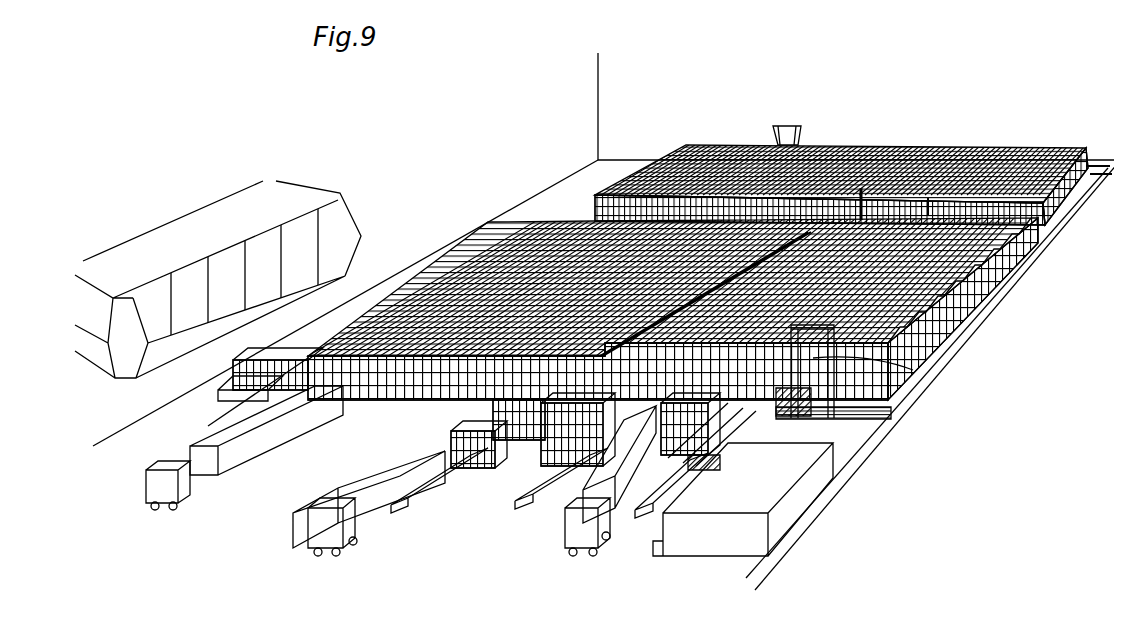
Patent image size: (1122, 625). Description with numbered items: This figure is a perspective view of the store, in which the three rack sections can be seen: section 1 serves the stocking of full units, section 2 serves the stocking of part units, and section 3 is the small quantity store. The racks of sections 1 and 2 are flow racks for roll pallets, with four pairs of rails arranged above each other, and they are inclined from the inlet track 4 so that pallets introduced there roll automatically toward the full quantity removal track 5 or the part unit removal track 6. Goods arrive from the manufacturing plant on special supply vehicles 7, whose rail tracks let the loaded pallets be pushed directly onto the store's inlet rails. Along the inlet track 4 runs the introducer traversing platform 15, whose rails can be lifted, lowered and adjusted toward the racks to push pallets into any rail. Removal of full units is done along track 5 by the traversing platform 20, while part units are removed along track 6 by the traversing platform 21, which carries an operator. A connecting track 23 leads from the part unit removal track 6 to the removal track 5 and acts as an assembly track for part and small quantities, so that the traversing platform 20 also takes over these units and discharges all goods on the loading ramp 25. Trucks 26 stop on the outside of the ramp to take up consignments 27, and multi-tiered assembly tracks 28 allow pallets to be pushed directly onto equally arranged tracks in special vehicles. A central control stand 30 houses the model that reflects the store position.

The rack section for full units 1 is at (673, 299).
The rack section for part units 2 is at (841, 185).
The small quantity store 3 is at (270, 374).
The inlet track 4 is at (920, 190).
The full quantity removal track 5 is at (882, 410).
The part unit removal track 6 is at (1090, 158).
The supply vehicle 7 is at (212, 427).
The introducer traversing platform 15 is at (872, 180).
The full unit removal traversing platform 20 is at (895, 358).
The part unit removal traversing platform 21 is at (781, 118).
The connecting track 23 is at (1057, 207).
The loading ramp 25 is at (838, 425).
The truck 26 is at (622, 485).
The consignment 27 is at (540, 452).
The multi-tiered assembly track 28 is at (713, 442).
The central control stand 30 is at (205, 208).